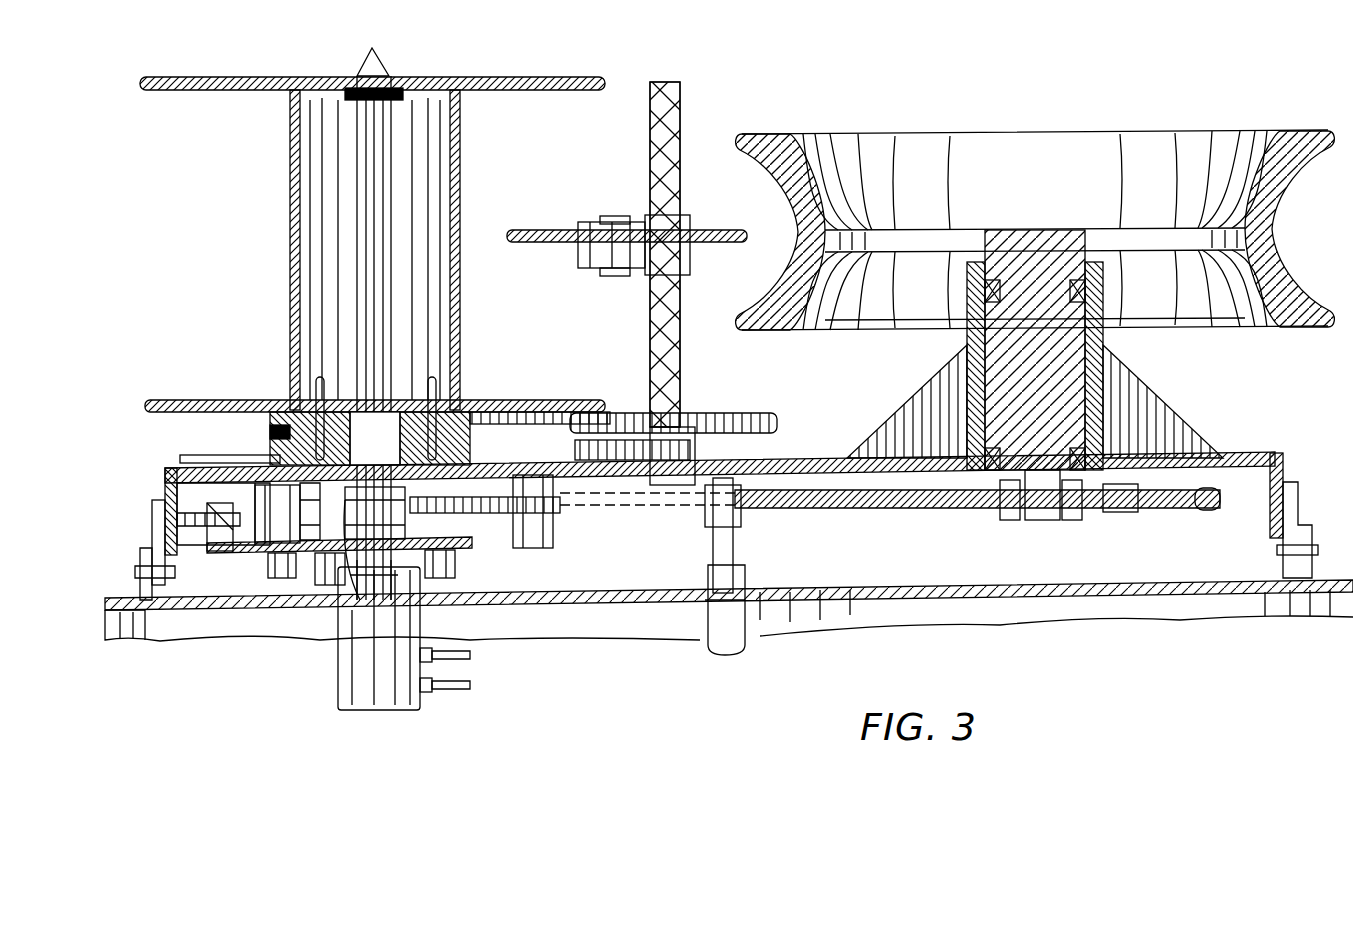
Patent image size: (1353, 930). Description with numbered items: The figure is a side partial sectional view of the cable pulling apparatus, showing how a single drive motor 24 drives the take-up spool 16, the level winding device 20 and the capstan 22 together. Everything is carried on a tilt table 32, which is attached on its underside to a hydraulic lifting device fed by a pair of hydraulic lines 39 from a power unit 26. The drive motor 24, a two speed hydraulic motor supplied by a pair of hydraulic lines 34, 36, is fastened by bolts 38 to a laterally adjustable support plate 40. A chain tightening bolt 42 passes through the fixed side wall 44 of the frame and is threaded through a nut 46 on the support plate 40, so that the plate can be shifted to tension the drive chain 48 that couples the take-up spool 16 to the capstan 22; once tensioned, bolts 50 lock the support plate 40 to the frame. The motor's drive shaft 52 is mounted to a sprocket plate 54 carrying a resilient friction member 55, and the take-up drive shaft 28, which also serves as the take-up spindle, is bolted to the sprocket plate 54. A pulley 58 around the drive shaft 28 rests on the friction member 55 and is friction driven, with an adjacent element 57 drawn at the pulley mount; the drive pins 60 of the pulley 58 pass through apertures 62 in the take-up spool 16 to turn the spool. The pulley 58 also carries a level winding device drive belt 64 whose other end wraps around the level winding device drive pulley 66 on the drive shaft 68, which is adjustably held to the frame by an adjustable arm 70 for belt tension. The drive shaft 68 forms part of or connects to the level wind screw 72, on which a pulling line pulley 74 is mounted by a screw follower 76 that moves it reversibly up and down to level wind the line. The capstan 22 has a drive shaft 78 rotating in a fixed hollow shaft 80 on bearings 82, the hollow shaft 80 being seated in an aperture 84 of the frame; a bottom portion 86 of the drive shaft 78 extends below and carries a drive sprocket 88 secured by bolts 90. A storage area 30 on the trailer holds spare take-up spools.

The take-up spool 16 is at (490, 77).
The level winding device 20 is at (693, 87).
The capstan 22 is at (1045, 150).
The drive motor 24 is at (400, 712).
The power unit 26 is at (375, 250).
The drive shaft 28 is at (390, 122).
The storage area 30 is at (729, 610).
The tilt table 32 is at (1245, 455).
The hydraulic line 34 is at (472, 685).
The hydraulic line 36 is at (472, 655).
The bolts 38 is at (395, 585).
The hydraulic lines 39 is at (770, 574).
The support plate 40 is at (218, 592).
The chain tightening bolt 42 is at (152, 512).
The fixed side wall 44 is at (160, 492).
The nut 46 is at (218, 545).
The drive chain 48 is at (855, 508).
The bolts 50 is at (275, 578).
The drive shaft 52 is at (328, 585).
The sprocket plate 54 is at (402, 578).
The resilient friction member 55 is at (255, 450).
The bearing housing 57 is at (275, 428).
The pulley 58 is at (270, 440).
The drive pins 60 is at (290, 400).
The apertures 62 is at (316, 380).
The level winding device drive belt 64 is at (545, 410).
The level winding device drive pulley 66 is at (760, 413).
The drive shaft 68 is at (712, 438).
The adjustable arm 70 is at (720, 452).
The level wind screw 72 is at (650, 148).
The pulling line pulley 74 is at (592, 228).
The screw follower 76 is at (690, 262).
The drive shaft 78 is at (960, 342).
The fixed hollow shaft 80 is at (965, 378).
The bearings 82 is at (1105, 292).
The aperture 84 is at (1128, 512).
The bottom portion 86 is at (1045, 475).
The drive sprocket 88 is at (1208, 510).
The bolts 90 is at (1010, 508).